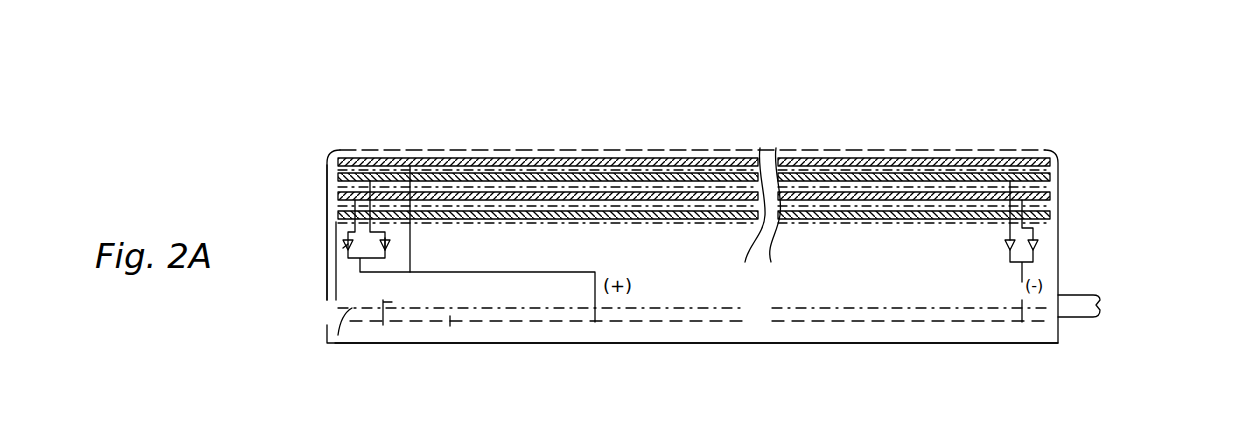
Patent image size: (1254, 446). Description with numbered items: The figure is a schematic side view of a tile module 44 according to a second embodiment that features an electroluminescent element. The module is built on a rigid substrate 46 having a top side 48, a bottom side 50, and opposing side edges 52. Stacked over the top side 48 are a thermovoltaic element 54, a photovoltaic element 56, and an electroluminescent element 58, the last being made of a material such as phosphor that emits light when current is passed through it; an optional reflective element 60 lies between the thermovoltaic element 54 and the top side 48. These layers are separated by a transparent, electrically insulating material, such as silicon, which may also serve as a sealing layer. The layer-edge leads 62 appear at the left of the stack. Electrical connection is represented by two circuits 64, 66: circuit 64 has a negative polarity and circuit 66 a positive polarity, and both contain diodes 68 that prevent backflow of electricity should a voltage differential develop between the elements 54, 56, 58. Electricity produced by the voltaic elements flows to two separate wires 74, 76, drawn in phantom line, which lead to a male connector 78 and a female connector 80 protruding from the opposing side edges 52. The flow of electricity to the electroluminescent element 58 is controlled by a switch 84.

The tile module 44 is at (905, 82).
The rigid substrate 46 is at (665, 262).
The top side 48 is at (330, 225).
The bottom side 50 is at (462, 362).
The opposing side edges 52 is at (327, 283).
The thermovoltaic element 54 is at (722, 193).
The photovoltaic element 56 is at (1052, 178).
The electroluminescent element 58 is at (1050, 163).
The reflective element 60 is at (1052, 208).
The conductive layers 62 is at (338, 177).
The circuit 64 is at (1053, 255).
The circuit 66 is at (408, 237).
The diodes 68 is at (327, 250).
The wire 74 is at (821, 308).
The wire 76 is at (858, 320).
The male connector 78 is at (1085, 317).
The female connector 80 is at (338, 335).
The switch 84 is at (413, 262).